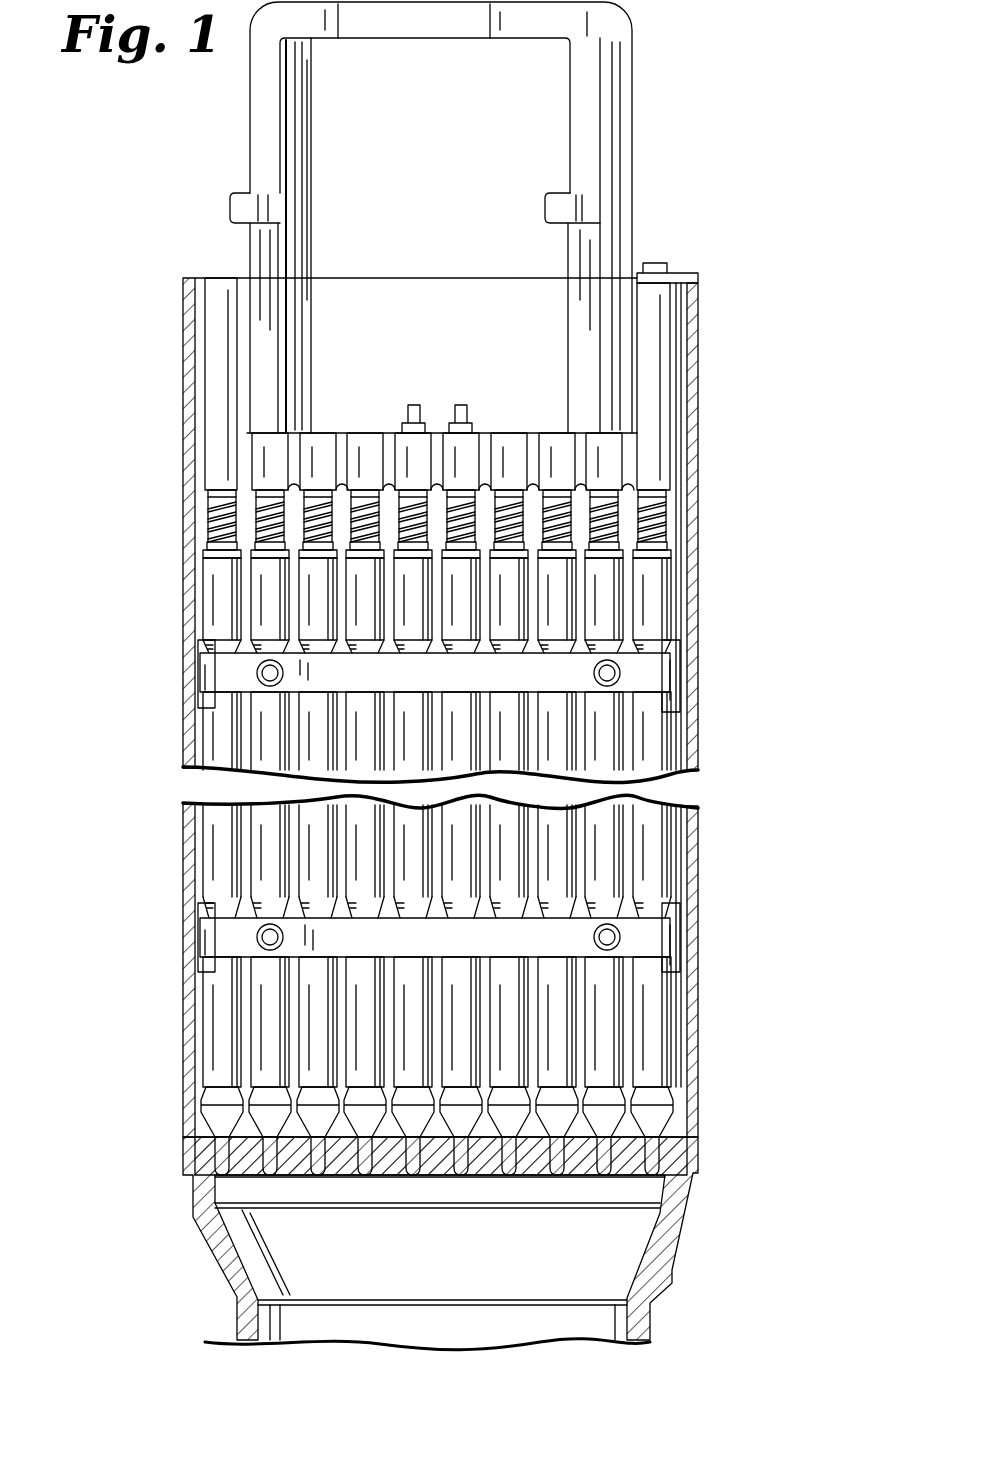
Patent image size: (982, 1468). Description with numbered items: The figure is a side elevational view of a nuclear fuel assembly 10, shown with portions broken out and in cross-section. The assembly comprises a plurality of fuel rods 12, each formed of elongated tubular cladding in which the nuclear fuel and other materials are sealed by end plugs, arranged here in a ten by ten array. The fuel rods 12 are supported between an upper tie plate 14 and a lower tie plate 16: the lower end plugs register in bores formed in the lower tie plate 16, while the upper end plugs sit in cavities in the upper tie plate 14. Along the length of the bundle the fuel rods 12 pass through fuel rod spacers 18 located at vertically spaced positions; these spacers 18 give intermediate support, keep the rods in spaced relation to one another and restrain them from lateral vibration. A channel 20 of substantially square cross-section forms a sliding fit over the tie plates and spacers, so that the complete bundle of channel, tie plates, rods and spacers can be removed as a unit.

The nuclear fuel assembly 10 is at (486, 676).
The fuel rods 12 is at (652, 743).
The upper tie plate 14 is at (598, 460).
The lower tie plate 16 is at (640, 1160).
The fuel rod spacers 18 is at (652, 942).
The channel 20 is at (697, 877).